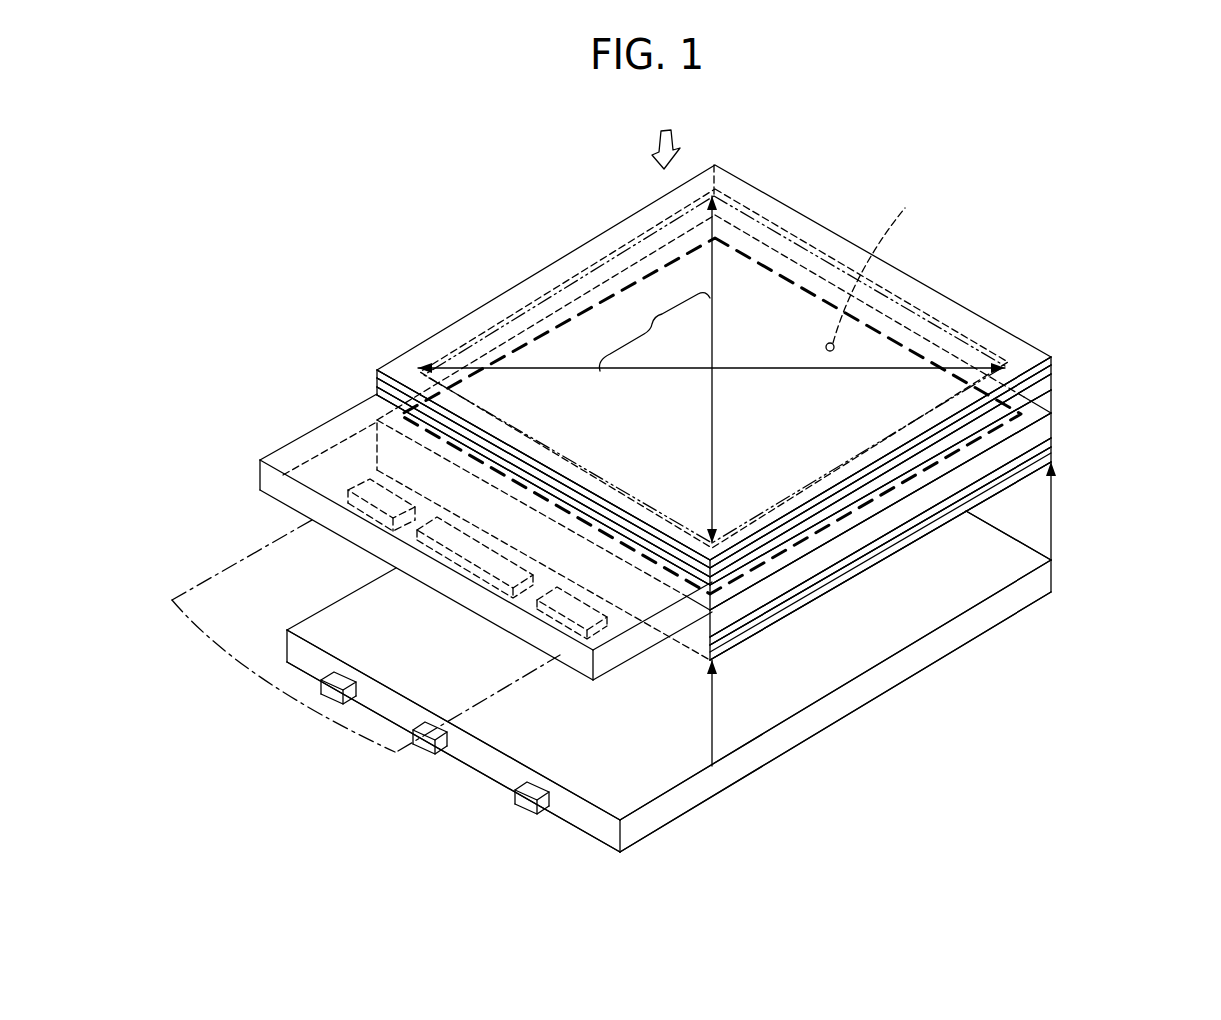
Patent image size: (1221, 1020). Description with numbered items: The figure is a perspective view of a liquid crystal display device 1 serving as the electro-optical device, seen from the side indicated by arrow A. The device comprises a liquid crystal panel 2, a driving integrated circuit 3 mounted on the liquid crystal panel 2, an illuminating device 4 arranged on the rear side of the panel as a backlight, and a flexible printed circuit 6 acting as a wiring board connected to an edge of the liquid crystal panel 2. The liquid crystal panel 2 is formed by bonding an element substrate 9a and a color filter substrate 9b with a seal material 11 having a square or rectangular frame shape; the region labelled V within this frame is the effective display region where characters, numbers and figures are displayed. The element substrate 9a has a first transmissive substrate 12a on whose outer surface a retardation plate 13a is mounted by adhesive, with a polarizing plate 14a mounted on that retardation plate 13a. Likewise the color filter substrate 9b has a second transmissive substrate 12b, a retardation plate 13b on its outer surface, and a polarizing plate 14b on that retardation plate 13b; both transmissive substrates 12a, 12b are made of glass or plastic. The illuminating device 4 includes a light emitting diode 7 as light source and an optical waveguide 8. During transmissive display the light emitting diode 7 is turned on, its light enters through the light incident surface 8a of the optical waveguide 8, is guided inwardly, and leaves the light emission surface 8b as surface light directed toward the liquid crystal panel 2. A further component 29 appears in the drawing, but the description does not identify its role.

The liquid crystal display device 1 is at (195, 370).
The liquid crystal panel 2 is at (1188, 303).
The driving integrated circuit 3 is at (396, 490).
The illuminating device 4 is at (854, 743).
The flexible printed circuit 6 is at (213, 580).
The light emitting diode 7 is at (417, 747).
The optical waveguide 8 is at (793, 730).
The light incident surface 8a is at (492, 757).
The light emission surface 8b is at (899, 620).
The element substrate 9a is at (1123, 303).
The color filter substrate 9b is at (1123, 415).
The seal material 11 is at (797, 273).
The first substrate 12a is at (1050, 391).
The second substrate 12b is at (1050, 433).
The retardation plate 13a is at (1052, 369).
The retardation plate 13b is at (1052, 449).
The polarizing plate 14a is at (1052, 360).
The polarizing plate 14b is at (1050, 461).
The frame 29 is at (374, 384).